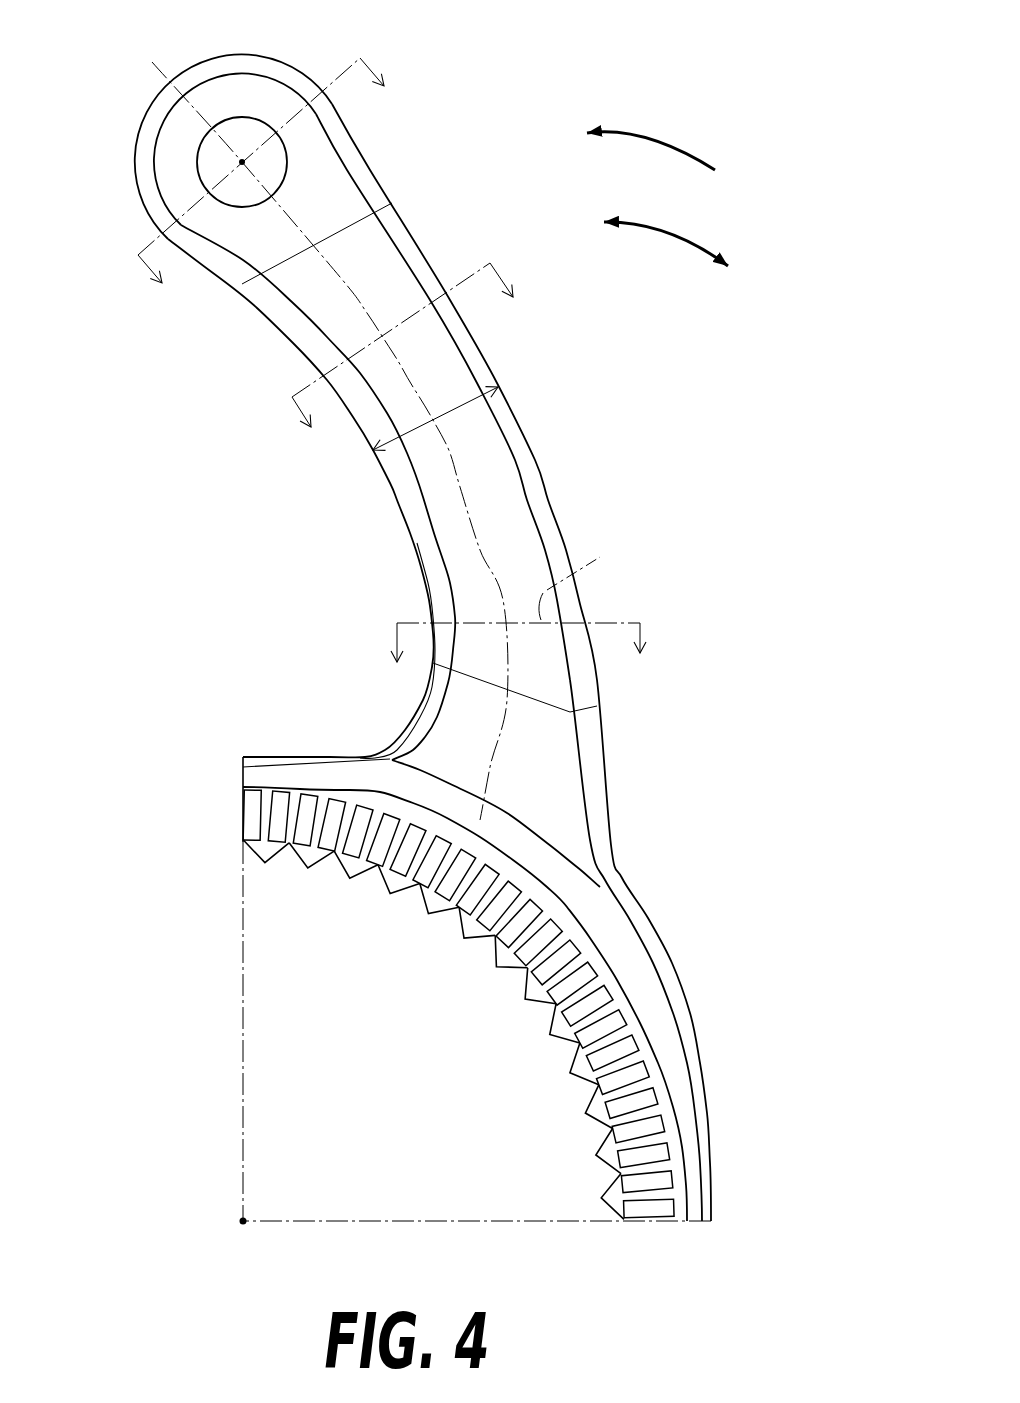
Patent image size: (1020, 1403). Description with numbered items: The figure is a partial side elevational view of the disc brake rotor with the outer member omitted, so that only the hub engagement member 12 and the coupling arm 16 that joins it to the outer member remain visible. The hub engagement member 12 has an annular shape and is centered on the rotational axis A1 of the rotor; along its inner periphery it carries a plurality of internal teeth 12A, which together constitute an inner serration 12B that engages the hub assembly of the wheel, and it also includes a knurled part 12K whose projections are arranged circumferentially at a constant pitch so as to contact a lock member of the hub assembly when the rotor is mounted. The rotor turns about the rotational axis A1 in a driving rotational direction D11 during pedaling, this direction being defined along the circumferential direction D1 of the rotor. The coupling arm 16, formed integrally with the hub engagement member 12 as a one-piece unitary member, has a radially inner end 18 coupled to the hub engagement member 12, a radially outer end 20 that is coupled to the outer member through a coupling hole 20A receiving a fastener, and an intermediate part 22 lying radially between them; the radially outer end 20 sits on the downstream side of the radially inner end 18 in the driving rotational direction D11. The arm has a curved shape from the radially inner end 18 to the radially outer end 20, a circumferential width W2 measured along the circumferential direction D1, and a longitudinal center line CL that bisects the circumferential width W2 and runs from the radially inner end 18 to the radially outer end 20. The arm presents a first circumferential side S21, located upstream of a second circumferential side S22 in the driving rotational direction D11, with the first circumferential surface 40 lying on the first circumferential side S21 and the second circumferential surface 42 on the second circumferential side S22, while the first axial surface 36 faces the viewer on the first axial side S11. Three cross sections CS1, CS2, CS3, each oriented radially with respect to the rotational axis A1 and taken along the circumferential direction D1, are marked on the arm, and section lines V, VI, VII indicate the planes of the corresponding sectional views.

The hub engagement member 12 is at (489, 952).
The internal teeth 12A is at (350, 875).
The inner serration 12B is at (468, 947).
The knurled part 12K is at (639, 1032).
The coupling arm 16 is at (429, 206).
The radially inner end 18 is at (583, 853).
The radially outer end 20 is at (199, 120).
The coupling hole 20A is at (197, 162).
The intermediate part 22 is at (383, 419).
The first axial surface 36 is at (445, 360).
The first circumferential surface 40 is at (462, 386).
The second circumferential surface 42 is at (296, 492).
The rotational axis A1 is at (243, 1221).
The longitudinal center line CL is at (345, 275).
The cross section CS1 is at (555, 588).
The cross section CS2 is at (407, 312).
The cross section CS3 is at (288, 118).
The circumferential direction D1 is at (668, 232).
The driving rotational direction D11 is at (648, 137).
The first axial side S11 is at (276, 772).
The first circumferential side S21 is at (537, 458).
The second circumferential side S22 is at (409, 531).
The circumferential width W2 is at (404, 445).
The section line V is at (514, 640).
The section line VI is at (404, 345).
The section line VII is at (254, 172).